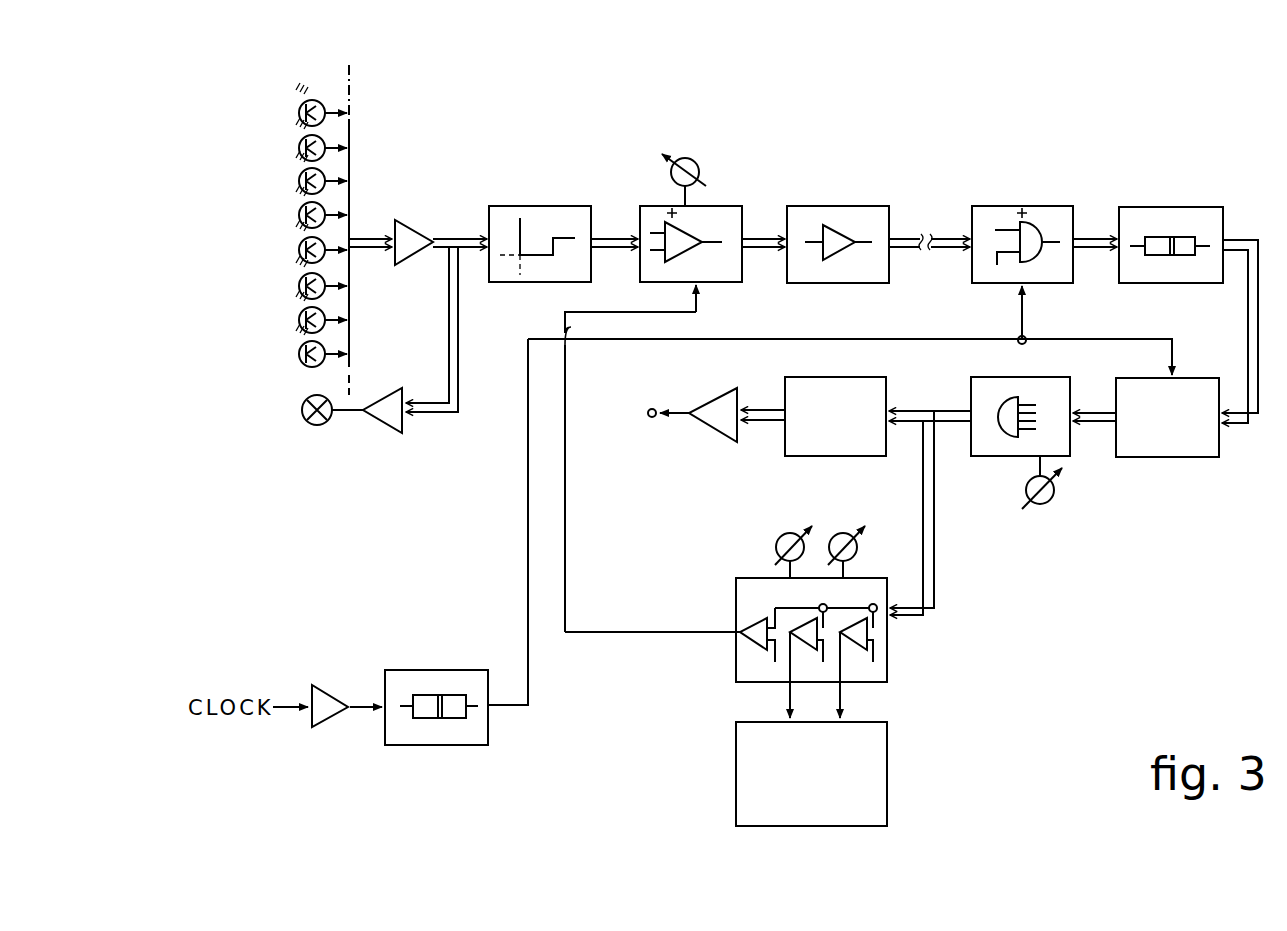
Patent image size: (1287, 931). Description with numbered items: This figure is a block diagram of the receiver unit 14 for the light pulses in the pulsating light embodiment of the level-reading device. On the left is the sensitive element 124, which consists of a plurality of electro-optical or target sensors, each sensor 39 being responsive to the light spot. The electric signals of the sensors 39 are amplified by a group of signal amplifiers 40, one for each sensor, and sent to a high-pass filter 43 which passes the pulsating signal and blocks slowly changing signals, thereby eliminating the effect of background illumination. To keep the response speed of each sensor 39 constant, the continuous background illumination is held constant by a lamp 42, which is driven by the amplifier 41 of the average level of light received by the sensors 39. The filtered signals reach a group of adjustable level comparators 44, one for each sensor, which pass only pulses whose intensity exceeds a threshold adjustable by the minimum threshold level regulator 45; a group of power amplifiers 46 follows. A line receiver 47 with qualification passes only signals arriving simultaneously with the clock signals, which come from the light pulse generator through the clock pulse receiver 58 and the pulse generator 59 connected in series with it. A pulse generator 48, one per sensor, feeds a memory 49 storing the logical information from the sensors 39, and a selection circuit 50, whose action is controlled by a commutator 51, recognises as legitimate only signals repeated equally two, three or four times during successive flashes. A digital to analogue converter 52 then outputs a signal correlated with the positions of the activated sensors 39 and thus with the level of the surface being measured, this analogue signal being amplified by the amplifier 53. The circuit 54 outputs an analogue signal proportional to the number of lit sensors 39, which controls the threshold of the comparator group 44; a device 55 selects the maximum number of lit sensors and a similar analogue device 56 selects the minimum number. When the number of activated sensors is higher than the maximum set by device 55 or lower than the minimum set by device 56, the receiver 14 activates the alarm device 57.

The receiver unit 14 is at (966, 122).
The sensor 39 is at (300, 180).
The sensitive element 124 is at (265, 257).
The group of signal amplifiers 40 is at (412, 236).
The average light level amplifier 41 is at (390, 422).
The lamp 42 is at (313, 426).
The high-pass filter 43 is at (547, 230).
The group of adjustable level comparators 44 is at (710, 268).
The minimum threshold level regulator 45 is at (701, 172).
The group of power amplifiers 46 is at (851, 216).
The line receiver 47 is at (1050, 216).
The pulse generator 48 is at (1202, 218).
The memory 49 is at (1151, 444).
The selection circuit 50 is at (997, 443).
The commutator 51 is at (1040, 506).
The digital to analogue converter 52 is at (833, 444).
The amplifier 53 is at (710, 422).
The circuit 54 is at (882, 666).
The maximum number selection device 55 is at (778, 549).
The minimum number selection device 56 is at (857, 551).
The alarm device 57 is at (876, 786).
The clock pulse receiver 58 is at (323, 716).
The pulse generator 59 is at (475, 736).